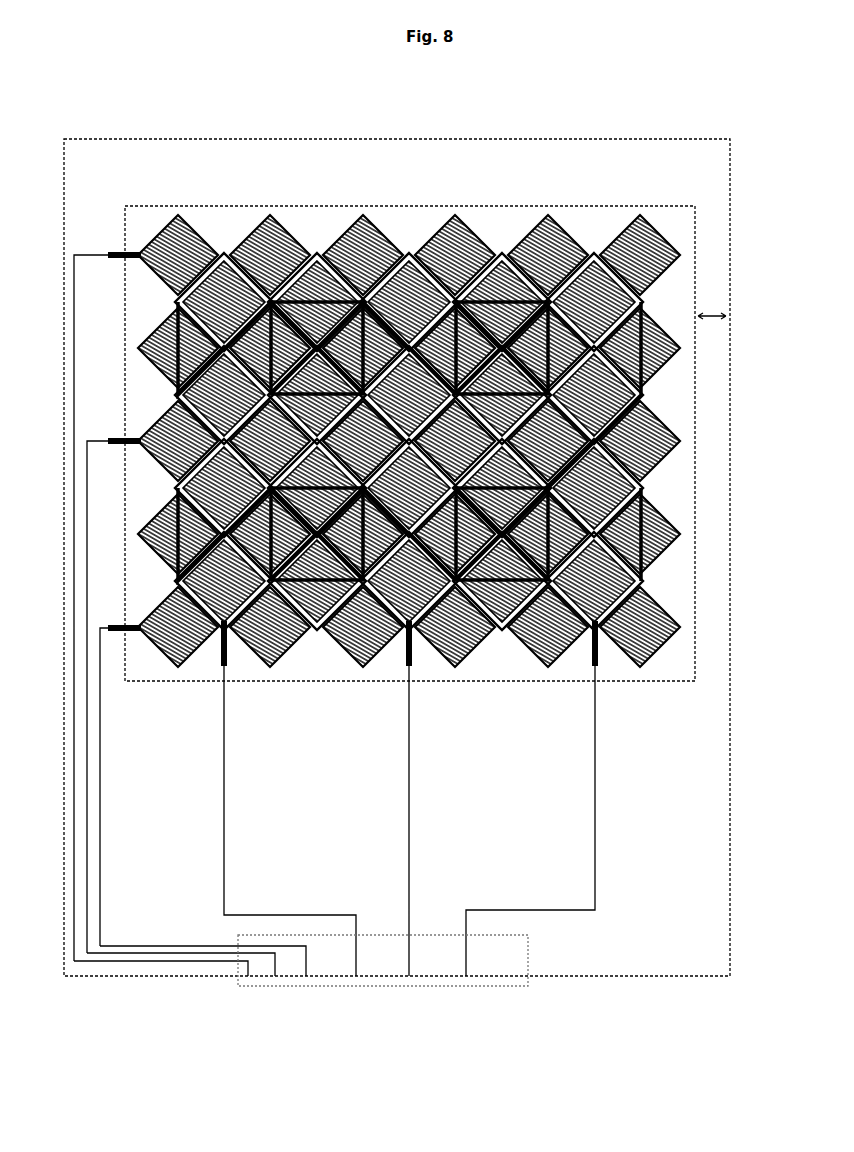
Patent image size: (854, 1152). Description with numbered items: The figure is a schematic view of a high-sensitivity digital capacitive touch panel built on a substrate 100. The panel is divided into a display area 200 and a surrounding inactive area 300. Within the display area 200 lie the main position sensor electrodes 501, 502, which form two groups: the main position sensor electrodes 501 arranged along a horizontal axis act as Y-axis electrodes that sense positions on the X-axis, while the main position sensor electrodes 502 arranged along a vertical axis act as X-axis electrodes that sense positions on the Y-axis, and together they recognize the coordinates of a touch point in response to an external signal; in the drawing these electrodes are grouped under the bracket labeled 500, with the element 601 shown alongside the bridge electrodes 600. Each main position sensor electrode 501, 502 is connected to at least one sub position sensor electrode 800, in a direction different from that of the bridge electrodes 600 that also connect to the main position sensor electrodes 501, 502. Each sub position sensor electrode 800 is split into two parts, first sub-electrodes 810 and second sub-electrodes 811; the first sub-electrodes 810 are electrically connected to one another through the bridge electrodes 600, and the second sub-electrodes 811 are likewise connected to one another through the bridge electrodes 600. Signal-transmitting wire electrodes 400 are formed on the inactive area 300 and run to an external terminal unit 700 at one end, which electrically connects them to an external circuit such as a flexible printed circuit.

The substrate 100 is at (722, 240).
The display area 200 is at (443, 411).
The inactive area 300 is at (706, 312).
The signal-transmitting wire electrodes 400 is at (402, 880).
The first electrode 500 is at (443, 411).
The main position sensor electrodes 501 is at (132, 320).
The main position sensor electrodes 502 is at (283, 237).
The bridge electrodes 600 is at (499, 244).
The second sensing electrode 601 is at (401, 245).
The external terminal unit 700 is at (520, 940).
The sub position sensor electrodes 800 is at (72, 420).
The first sub-electrodes 810 is at (104, 622).
The second sub-electrodes 811 is at (213, 660).